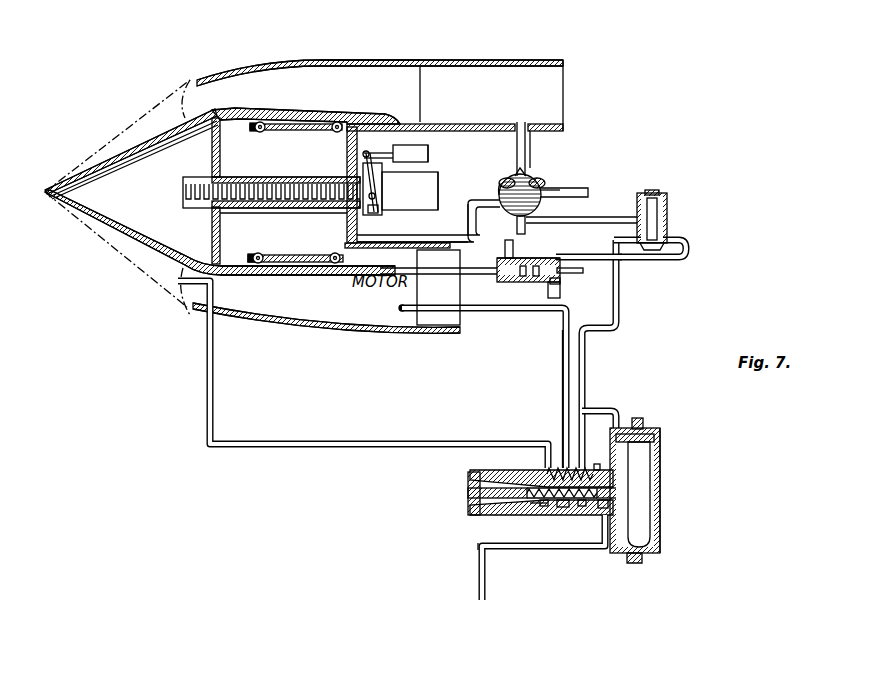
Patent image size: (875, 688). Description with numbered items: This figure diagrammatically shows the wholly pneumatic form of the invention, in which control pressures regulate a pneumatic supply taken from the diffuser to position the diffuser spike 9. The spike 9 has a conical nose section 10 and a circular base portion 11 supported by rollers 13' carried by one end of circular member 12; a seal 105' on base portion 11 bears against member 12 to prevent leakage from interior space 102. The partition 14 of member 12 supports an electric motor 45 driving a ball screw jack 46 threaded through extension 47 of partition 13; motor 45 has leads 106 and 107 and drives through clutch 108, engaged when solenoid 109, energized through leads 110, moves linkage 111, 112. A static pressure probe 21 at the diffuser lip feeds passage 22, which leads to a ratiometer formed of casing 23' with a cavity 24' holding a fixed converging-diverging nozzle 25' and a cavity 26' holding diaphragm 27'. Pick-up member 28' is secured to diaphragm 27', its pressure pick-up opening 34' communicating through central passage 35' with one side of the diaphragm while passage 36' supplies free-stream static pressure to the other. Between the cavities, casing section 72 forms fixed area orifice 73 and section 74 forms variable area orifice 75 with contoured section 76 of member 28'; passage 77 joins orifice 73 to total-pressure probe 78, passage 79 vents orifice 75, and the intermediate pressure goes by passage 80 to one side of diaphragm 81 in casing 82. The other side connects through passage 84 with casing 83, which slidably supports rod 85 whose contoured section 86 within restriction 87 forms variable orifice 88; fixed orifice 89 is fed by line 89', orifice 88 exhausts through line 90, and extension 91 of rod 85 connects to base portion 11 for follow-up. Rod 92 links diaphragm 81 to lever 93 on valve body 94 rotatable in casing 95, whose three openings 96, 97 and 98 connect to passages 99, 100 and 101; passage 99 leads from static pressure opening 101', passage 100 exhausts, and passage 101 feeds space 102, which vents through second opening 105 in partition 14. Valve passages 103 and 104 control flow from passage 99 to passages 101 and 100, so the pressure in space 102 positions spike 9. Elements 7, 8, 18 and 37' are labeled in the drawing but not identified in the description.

The outer shell 7 is at (247, 63).
The cowl 8 is at (318, 60).
The diffuser spike 9 is at (143, 250).
The conical nose section 10 is at (93, 218).
The circular base portion 11 is at (253, 275).
The circular member 12 is at (480, 123).
The partition 13 is at (491, 79).
The rollers 13' is at (295, 173).
The partition 14 is at (347, 162).
The chamber 18 is at (220, 250).
The static pressure probe 21 is at (182, 290).
The passage 22 is at (210, 403).
The casing 23' is at (448, 489).
The cavity 24' is at (520, 488).
The fixed converging-diverging nozzle 25' is at (541, 482).
The cavity 26' is at (663, 490).
The diaphragm 27' is at (683, 490).
The pick-up member 28' is at (507, 500).
The pressure pick-up opening 34' is at (535, 520).
The central passage 35' is at (545, 541).
The passage 36' is at (621, 407).
The bracket 37' is at (448, 562).
The electric motor 45 is at (415, 272).
The ball screw jack 46 is at (325, 208).
The extension 47 is at (287, 177).
The casing section 72 is at (570, 462).
The fixed area orifice 73 is at (563, 507).
The casing section 74 is at (603, 510).
The variable area orifice 75 is at (597, 464).
The contoured section 76 is at (583, 508).
The passage 77 is at (563, 388).
The probe 78 is at (400, 307).
The passage 79 is at (512, 550).
The passage 80 is at (587, 365).
The diaphragm 81 is at (658, 203).
The casing 82 is at (667, 195).
The casing 83 is at (505, 283).
The passage 84 is at (688, 250).
The rod 85 is at (582, 265).
The contoured section 86 is at (527, 282).
The restriction 87 is at (533, 268).
The variable area orifice 88 is at (535, 282).
The fixed area orifice 89 is at (574, 288).
The line 89' is at (574, 298).
The line 90 is at (503, 252).
The extension 91 is at (475, 275).
The rod 92 is at (620, 216).
The lever 93 is at (517, 222).
The valve body 94 is at (537, 212).
The casing 95 is at (540, 174).
The opening 96 is at (511, 177).
The opening 97 is at (543, 190).
The opening 98 is at (477, 208).
The passage 99 is at (531, 147).
The passage 100 is at (570, 197).
The passage 101 is at (412, 230).
The static pressure opening 101' is at (534, 135).
The interior space 102 is at (316, 250).
The passage 103 is at (503, 177).
The passage 104 is at (546, 183).
The second opening 105 is at (326, 185).
The seal 105' is at (306, 105).
The lead 106 is at (441, 186).
The lead 107 is at (450, 200).
The clutch 108 is at (372, 214).
The solenoid 109 is at (410, 153).
The leads 110 is at (439, 152).
The linkage 111 is at (368, 152).
The linkage 112 is at (375, 178).